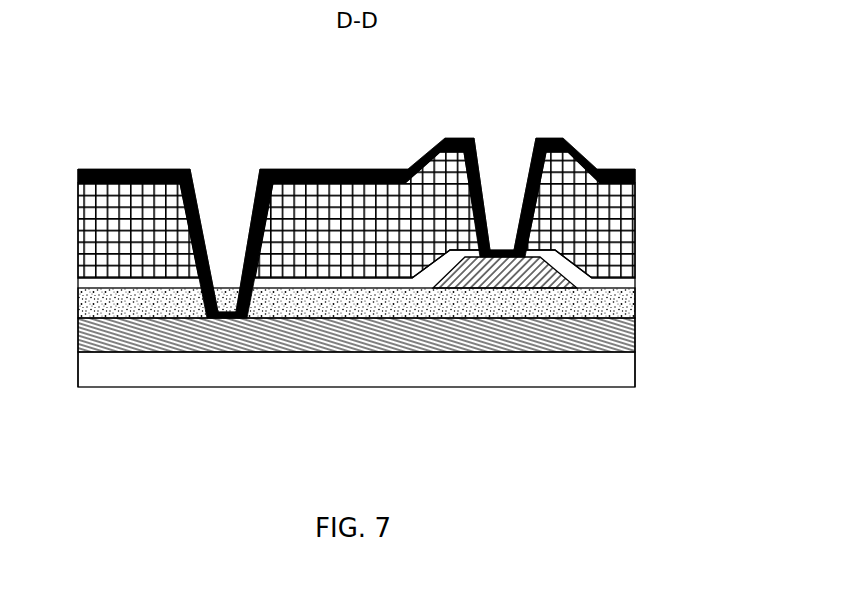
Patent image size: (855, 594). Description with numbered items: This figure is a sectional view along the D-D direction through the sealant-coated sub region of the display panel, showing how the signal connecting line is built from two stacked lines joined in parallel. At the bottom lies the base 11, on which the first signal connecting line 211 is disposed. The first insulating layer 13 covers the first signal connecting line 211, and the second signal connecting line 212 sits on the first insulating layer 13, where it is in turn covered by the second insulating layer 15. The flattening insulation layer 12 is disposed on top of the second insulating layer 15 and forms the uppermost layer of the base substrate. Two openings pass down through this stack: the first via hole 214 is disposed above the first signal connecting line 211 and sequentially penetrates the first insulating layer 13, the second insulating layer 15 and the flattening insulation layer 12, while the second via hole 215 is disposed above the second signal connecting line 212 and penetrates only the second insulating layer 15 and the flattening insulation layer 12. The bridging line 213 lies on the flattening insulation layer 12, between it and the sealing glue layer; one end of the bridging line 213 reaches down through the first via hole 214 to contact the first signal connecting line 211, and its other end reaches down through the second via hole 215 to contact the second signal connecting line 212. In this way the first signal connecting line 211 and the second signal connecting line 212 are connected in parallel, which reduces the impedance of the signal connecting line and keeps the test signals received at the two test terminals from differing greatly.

The base 11 is at (150, 367).
The first signal connecting line 211 is at (240, 353).
The first insulating layer 13 is at (332, 290).
The flattening insulation layer 12 is at (344, 215).
The second insulating layer 15 is at (433, 270).
The second signal connecting line 212 is at (503, 270).
The bridging line 213 is at (117, 168).
The first via hole 214 is at (225, 250).
The second via hole 215 is at (505, 215).